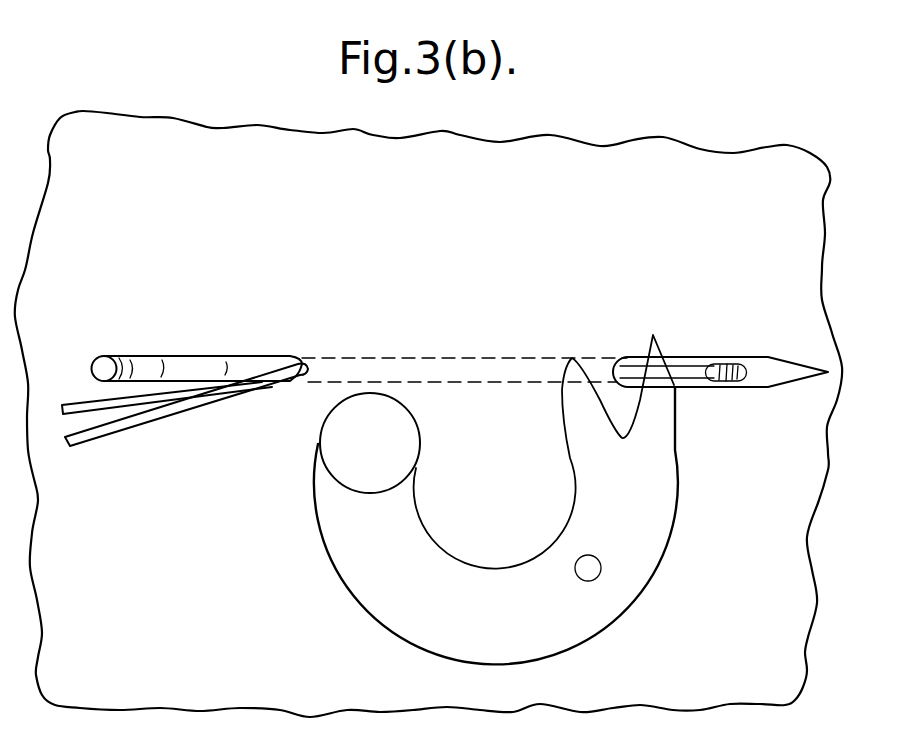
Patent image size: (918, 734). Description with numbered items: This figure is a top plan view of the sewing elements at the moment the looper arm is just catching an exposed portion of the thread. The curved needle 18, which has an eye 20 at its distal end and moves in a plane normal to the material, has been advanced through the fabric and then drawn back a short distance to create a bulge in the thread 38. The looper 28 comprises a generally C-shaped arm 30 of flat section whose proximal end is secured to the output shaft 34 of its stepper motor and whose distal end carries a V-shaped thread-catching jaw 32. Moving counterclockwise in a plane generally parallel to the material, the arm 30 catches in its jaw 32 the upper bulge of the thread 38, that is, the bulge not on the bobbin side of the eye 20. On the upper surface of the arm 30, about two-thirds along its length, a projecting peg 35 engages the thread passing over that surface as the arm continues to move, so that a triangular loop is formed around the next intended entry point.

The curved needle 18 is at (188, 362).
The thread 38 is at (162, 416).
The C-shaped arm 30 is at (482, 578).
The output shaft 34 is at (375, 410).
The V-shaped thread-catching jaw 32 is at (600, 358).
The eye 20 is at (718, 363).
The projecting peg 35 is at (600, 570).
The looper 28 is at (252, 523).